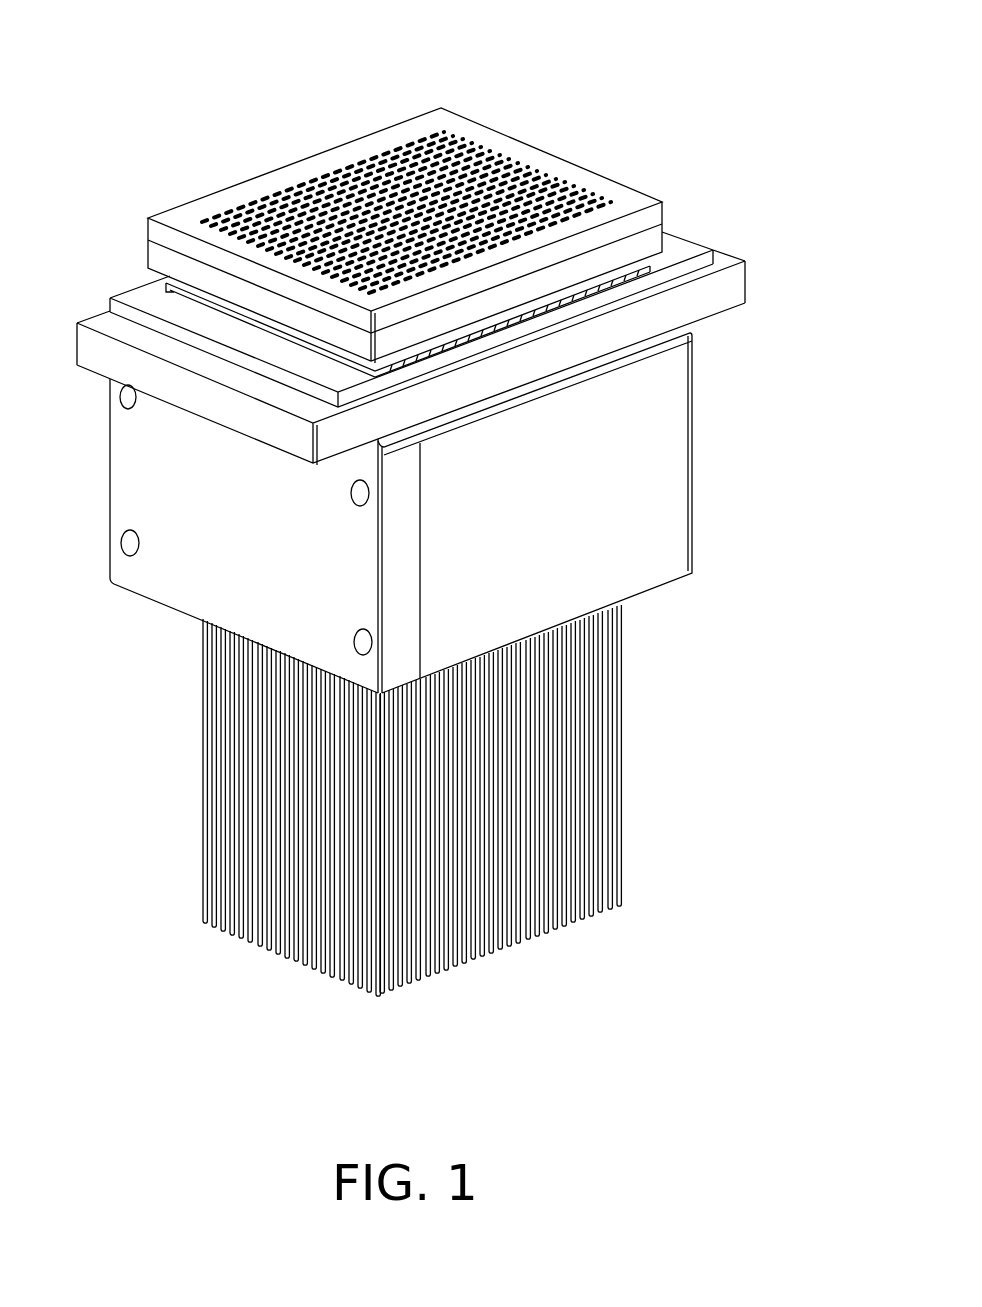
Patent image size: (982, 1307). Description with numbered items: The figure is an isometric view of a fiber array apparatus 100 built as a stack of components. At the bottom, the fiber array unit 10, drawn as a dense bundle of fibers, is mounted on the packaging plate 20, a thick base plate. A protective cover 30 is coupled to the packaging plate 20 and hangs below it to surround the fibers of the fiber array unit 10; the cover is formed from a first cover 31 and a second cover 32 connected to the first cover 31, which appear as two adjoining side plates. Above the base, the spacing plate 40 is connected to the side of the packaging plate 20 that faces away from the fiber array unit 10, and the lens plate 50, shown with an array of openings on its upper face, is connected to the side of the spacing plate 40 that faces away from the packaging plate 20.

The fiber array apparatus 100 is at (338, 35).
The fiber array unit 10 is at (625, 715).
The packaging plate 20 is at (733, 284).
The protective cover 30 is at (374, 535).
The first cover 31 is at (447, 612).
The second cover 32 is at (193, 592).
The spacing plate 40 is at (653, 238).
The lens plate 50 is at (621, 193).